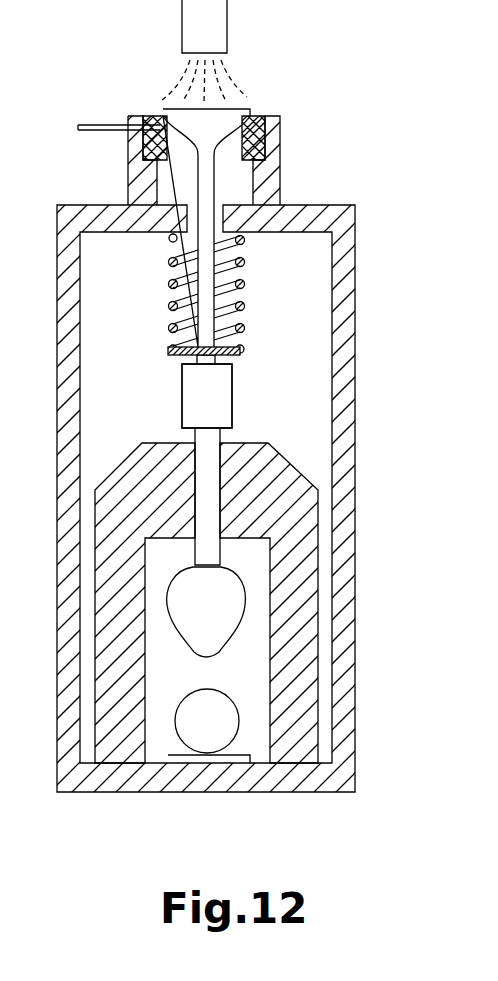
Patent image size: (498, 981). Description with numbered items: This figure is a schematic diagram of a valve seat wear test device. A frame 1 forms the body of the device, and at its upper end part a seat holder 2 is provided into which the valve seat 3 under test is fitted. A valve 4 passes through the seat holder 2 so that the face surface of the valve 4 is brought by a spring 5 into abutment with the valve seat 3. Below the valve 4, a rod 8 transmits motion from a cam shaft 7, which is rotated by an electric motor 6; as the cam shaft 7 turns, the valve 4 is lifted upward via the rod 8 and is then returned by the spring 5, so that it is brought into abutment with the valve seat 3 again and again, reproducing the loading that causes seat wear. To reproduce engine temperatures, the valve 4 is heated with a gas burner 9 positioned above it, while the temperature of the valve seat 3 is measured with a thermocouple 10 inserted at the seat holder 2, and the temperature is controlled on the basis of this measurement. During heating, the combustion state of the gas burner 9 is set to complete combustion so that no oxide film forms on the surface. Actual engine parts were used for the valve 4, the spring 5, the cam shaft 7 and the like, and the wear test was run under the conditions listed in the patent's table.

The frame 1 is at (350, 223).
The seat holder 2 is at (260, 139).
The valve seat 3 is at (243, 121).
The valve 4 is at (212, 117).
The spring 5 is at (242, 306).
The electric motor 6 is at (225, 720).
The cam shaft 7 is at (215, 637).
The rod 8 is at (220, 393).
The gas burner 9 is at (218, 15).
The thermocouple 10 is at (96, 125).